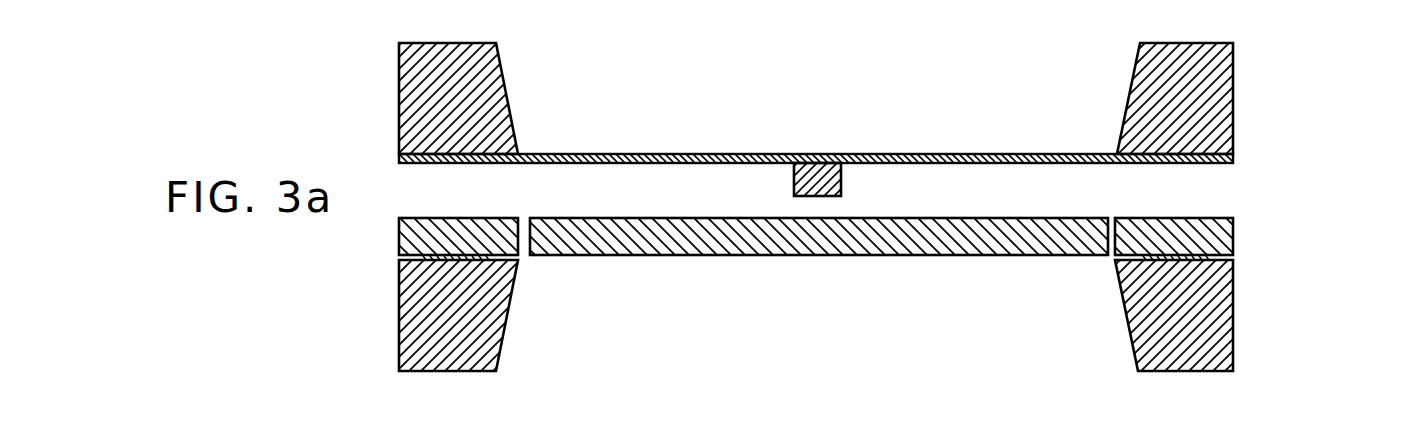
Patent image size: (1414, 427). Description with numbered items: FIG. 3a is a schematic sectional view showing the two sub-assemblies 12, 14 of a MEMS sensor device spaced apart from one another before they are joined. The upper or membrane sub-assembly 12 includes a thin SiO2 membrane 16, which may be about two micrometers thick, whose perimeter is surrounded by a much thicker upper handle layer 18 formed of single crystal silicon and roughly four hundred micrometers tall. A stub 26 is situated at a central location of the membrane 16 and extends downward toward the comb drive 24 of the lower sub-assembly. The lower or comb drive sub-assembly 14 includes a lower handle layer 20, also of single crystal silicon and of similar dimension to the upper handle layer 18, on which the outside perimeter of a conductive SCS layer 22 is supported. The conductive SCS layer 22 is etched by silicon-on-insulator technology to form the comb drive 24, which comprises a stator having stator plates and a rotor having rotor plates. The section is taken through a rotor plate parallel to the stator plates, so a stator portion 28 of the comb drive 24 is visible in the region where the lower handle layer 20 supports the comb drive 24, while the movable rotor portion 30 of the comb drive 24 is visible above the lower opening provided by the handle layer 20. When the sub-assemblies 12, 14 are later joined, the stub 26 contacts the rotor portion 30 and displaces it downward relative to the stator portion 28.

The upper or membrane sub-assembly 12 is at (322, 89).
The lower or comb drive sub-assembly 14 is at (322, 315).
The SiO2 membrane 16 is at (568, 153).
The upper handle layer 18 is at (1235, 92).
The lower handle layer 20 is at (1222, 313).
The conductive SCS layer 22 is at (1223, 245).
The comb drive 24 is at (871, 246).
The stub 26 is at (842, 186).
The stator portion 28 is at (1177, 230).
The movable rotor portion 30 is at (952, 248).